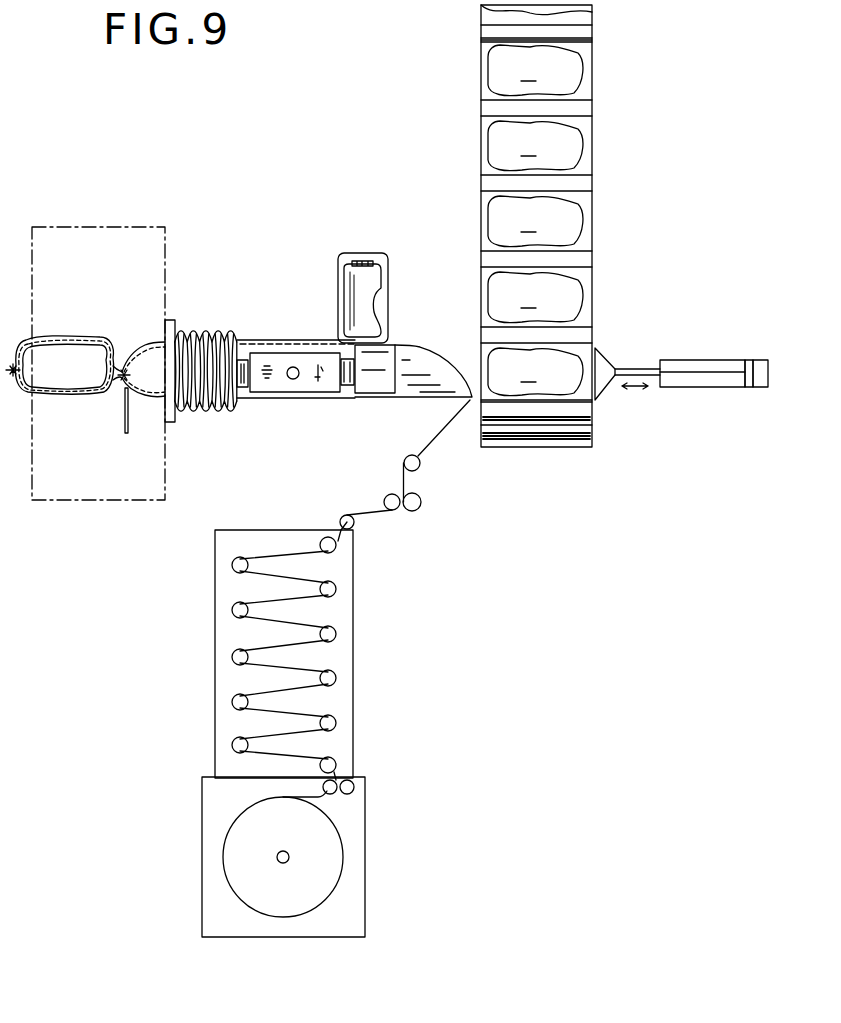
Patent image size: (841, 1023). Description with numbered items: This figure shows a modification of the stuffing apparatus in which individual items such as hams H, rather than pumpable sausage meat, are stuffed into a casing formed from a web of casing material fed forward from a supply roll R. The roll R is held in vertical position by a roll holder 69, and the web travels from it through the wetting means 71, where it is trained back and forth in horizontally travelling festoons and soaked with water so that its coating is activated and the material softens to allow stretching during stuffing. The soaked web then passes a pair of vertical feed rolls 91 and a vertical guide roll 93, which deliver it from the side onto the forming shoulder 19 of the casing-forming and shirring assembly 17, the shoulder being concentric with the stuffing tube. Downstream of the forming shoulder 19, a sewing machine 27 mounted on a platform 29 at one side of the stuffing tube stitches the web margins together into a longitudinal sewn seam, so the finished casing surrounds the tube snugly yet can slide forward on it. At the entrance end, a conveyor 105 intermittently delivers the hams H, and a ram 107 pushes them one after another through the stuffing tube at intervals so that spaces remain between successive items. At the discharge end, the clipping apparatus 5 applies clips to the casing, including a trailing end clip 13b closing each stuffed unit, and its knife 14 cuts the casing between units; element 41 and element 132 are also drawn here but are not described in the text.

The clipping apparatus 5 is at (27, 487).
The trailing end clip 13b is at (120, 370).
The knife 14 is at (122, 410).
The casing-forming and shirring assembly 17 is at (275, 396).
The forming shoulder 19 is at (428, 388).
The sewing machine 27 is at (381, 290).
The platform 29 is at (360, 260).
The valve 41 is at (346, 394).
The roll holder 69 is at (308, 879).
The wetting means 71 is at (213, 683).
The feed rolls 91 is at (390, 497).
The guide roll 93 is at (420, 464).
The conveyor 105 is at (592, 157).
The ram 107 is at (607, 356).
The tie 132 is at (12, 372).
The ham H is at (73, 372).
The roll R is at (333, 857).